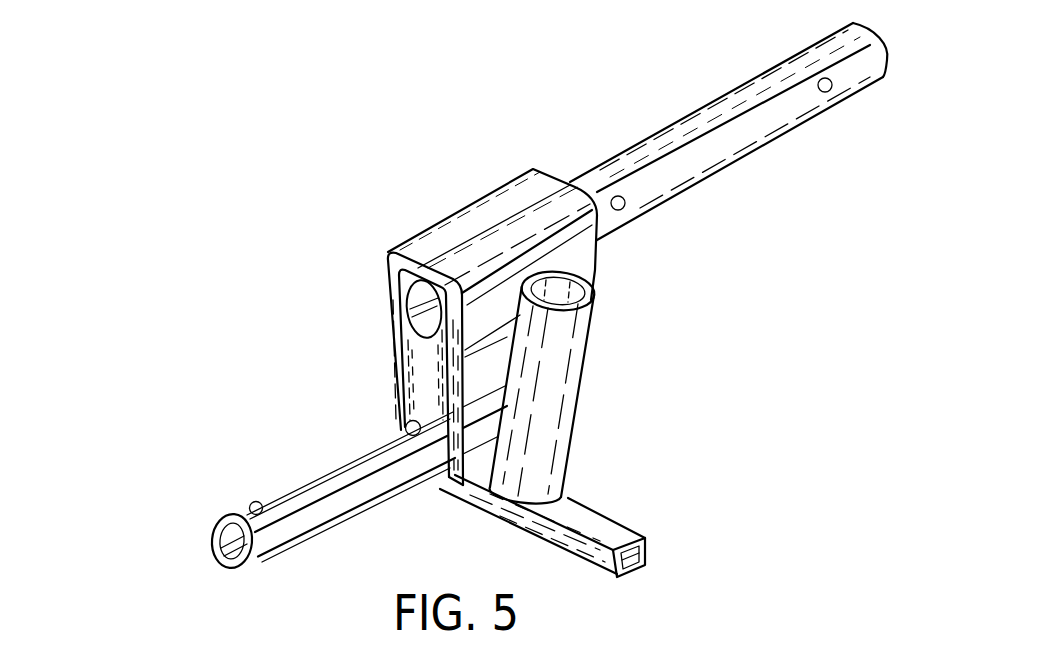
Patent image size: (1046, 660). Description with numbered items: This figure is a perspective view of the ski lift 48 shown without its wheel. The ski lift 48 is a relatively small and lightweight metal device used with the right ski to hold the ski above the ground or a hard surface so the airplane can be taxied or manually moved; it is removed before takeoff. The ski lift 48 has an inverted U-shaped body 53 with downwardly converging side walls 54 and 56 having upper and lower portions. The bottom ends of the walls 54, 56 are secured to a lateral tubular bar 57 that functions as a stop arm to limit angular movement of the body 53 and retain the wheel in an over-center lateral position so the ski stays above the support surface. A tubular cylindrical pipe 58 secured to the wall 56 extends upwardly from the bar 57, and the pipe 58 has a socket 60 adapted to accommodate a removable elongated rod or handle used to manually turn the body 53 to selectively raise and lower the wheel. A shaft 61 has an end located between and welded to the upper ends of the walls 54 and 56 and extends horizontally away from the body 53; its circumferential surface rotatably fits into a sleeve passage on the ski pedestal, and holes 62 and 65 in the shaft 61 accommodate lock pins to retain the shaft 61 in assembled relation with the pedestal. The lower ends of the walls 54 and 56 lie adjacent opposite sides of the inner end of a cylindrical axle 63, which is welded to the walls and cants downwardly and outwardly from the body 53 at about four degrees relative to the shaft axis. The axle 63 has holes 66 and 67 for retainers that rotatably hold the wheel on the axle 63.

The ski lift 48 is at (363, 181).
The inverted U-shaped body 53 is at (482, 210).
The side wall 54 is at (388, 353).
The side wall 56 is at (473, 457).
The lateral tubular bar 57 is at (607, 535).
The pipe 58 is at (572, 360).
The socket 60 is at (573, 292).
The shaft 61 is at (673, 137).
The hole 62 is at (618, 210).
The cylindrical axle 63 is at (312, 522).
The hole 65 is at (825, 92).
The hole 66 is at (251, 503).
The hole 67 is at (403, 428).